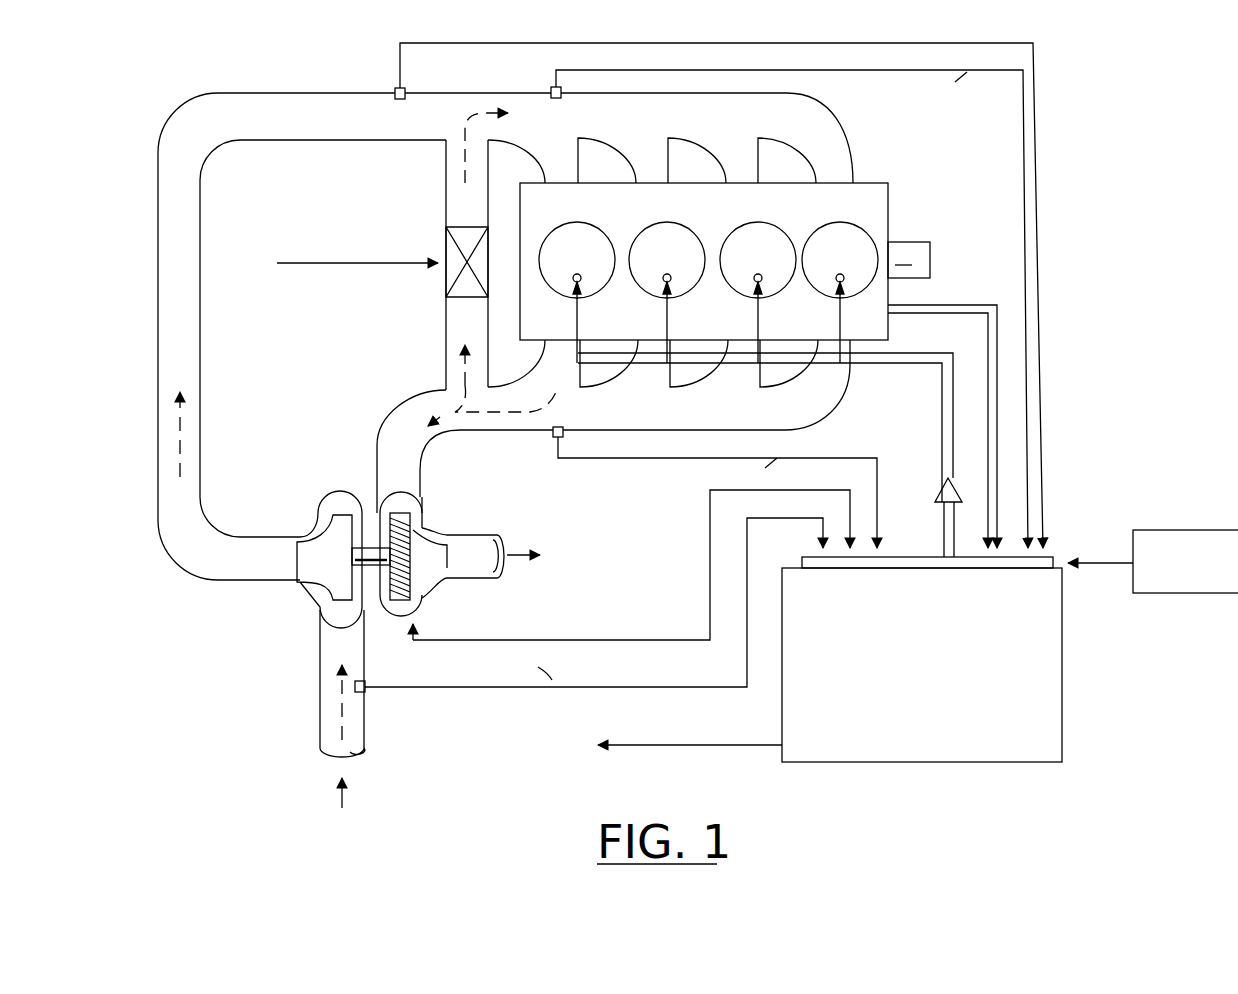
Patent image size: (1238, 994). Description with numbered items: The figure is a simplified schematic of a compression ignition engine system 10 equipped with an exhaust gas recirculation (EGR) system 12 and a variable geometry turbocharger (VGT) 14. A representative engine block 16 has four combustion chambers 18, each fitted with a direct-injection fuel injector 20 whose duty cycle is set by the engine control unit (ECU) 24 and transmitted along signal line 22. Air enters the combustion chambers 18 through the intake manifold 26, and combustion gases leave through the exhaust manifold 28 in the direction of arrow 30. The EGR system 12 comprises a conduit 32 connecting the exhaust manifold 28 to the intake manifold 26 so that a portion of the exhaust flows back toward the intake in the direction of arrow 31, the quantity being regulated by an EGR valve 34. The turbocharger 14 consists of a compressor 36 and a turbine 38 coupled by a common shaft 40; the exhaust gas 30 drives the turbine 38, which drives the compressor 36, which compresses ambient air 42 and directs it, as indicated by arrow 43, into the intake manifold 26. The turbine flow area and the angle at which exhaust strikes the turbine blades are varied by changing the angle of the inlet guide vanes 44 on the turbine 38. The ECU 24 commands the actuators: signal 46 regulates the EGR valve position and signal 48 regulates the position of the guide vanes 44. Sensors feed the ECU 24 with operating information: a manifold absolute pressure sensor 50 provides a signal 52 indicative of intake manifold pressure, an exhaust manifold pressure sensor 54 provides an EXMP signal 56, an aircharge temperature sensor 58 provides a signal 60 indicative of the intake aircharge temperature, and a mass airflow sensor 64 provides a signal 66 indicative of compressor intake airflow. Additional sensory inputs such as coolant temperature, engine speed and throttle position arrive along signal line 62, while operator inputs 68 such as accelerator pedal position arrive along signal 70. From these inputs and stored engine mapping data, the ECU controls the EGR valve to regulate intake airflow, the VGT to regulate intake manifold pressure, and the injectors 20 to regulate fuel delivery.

The compression ignition engine system 10 is at (1156, 189).
The exhaust gas recirculation (EGR) system 12 is at (430, 290).
The variable geometry turbocharger (VGT) 14 is at (365, 475).
The engine block 16 is at (880, 193).
The combustion chambers 18 is at (835, 228).
The direct-injection fuel injector 20 is at (838, 283).
The signal line 22 is at (940, 400).
The engine control unit (ECU) 24 is at (1065, 647).
The intake manifold 26 is at (807, 100).
The exhaust manifold 28 is at (840, 402).
The arrow (exhaust gas flow) 30 is at (477, 412).
The arrow (recirculated exhaust flow) 31 is at (462, 357).
The conduit 32 is at (442, 154).
The EGR valve 34 is at (442, 230).
The compressor 36 is at (313, 583).
The turbine 38 is at (445, 600).
The common shaft 40 is at (340, 595).
The ambient air 42 is at (340, 789).
The arrow (compressed air flow) 43 is at (177, 430).
The inlet guide vanes 44 is at (417, 528).
The signal 46 is at (753, 747).
The signal 48 is at (565, 642).
The manifold absolute pressure (MAP) sensor 50 is at (552, 90).
The signal 52 is at (1025, 100).
The exhaust manifold pressure (EXMP) sensor 54 is at (552, 438).
The EXMP signal 56 is at (662, 458).
The aircharge temperature sensor 58 is at (393, 100).
The signal 60 is at (1042, 210).
The signal line 62 is at (997, 378).
The mass airflow (MAF) sensor 64 is at (365, 693).
The signal 66 is at (630, 682).
The operator inputs 68 is at (1168, 530).
The signal 70 is at (1088, 560).